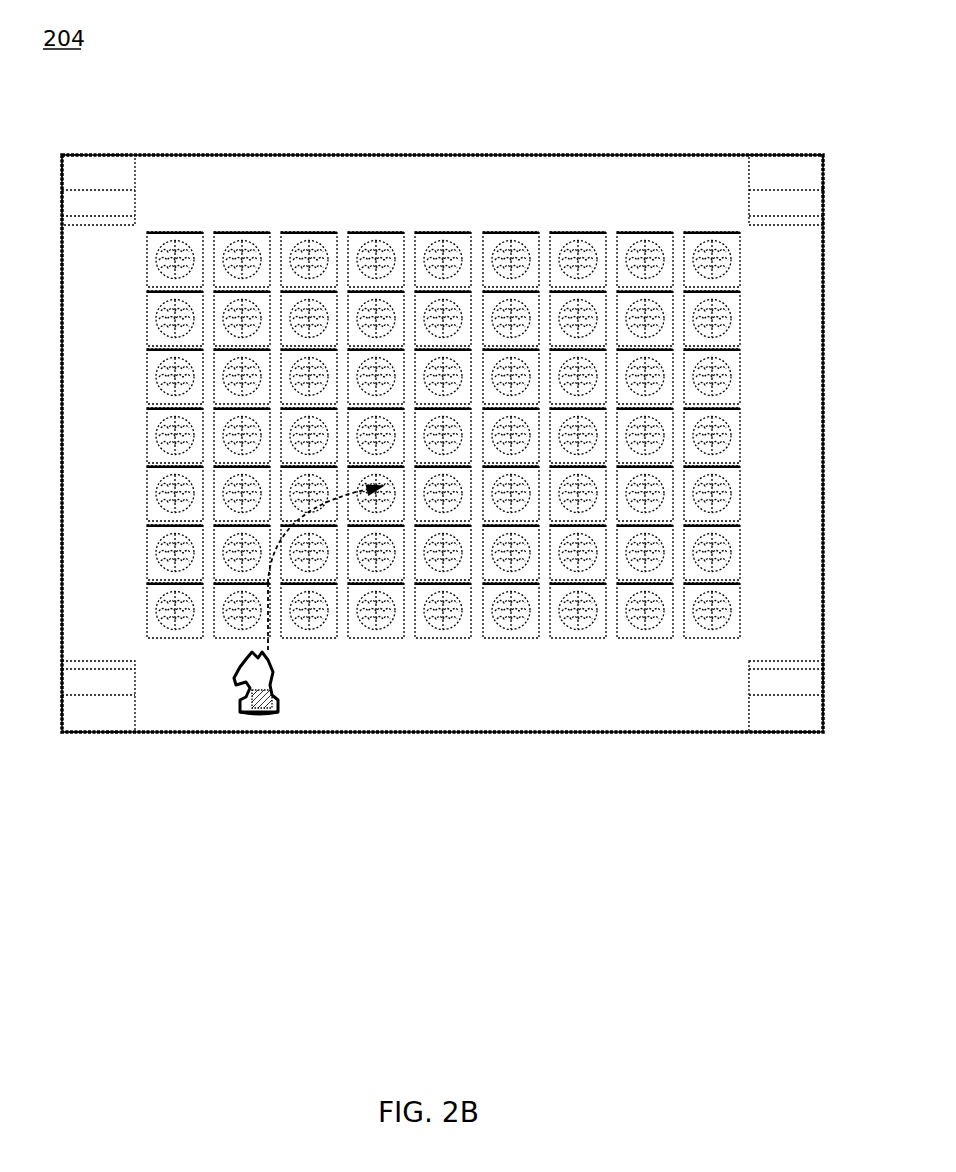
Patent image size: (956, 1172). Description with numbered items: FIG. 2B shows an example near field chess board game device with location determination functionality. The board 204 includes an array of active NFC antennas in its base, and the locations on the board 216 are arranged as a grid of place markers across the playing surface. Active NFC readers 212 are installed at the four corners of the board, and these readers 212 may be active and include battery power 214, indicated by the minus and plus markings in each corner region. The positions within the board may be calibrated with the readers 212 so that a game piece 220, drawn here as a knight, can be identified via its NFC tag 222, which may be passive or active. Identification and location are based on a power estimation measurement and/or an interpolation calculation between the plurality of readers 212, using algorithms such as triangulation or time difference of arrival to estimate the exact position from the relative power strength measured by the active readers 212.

The board 204 is at (442, 443).
The active NFC readers 212 is at (105, 168).
The battery power 214 is at (442, 442).
The locations on the board 216 is at (150, 320).
The game piece 220 is at (262, 712).
The NFC tag 222 is at (280, 694).